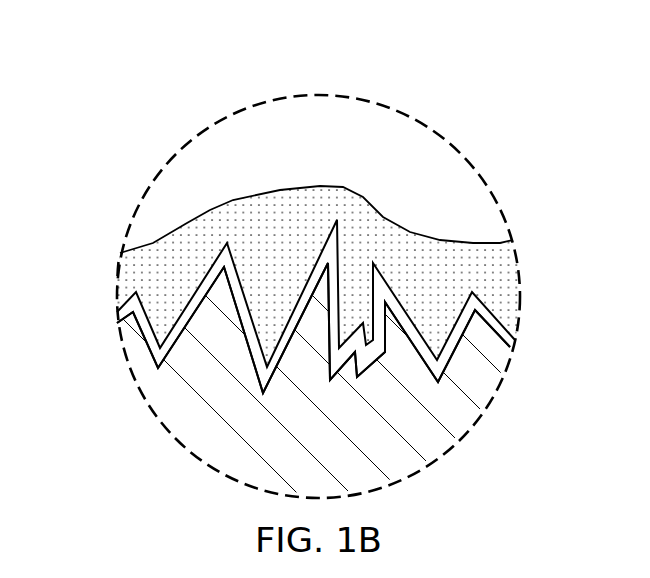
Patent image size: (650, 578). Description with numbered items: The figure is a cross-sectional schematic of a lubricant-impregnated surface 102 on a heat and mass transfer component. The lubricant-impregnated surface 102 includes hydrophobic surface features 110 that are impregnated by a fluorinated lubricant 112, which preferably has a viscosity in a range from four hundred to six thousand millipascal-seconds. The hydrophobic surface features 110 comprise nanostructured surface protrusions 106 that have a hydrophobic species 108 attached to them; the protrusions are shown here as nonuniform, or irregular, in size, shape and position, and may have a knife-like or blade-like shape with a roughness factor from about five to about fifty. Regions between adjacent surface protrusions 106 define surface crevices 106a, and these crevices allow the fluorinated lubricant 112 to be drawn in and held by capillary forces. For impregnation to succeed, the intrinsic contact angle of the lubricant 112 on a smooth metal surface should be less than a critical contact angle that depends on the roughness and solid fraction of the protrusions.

The lubricant-impregnated surface 102 is at (238, 77).
The nanostructured surface protrusions 106 is at (125, 364).
The surface crevices 106a is at (152, 323).
The hydrophobic species 108 is at (497, 311).
The hydrophobic surface features 110 is at (168, 272).
The fluorinated lubricant 112 is at (122, 280).